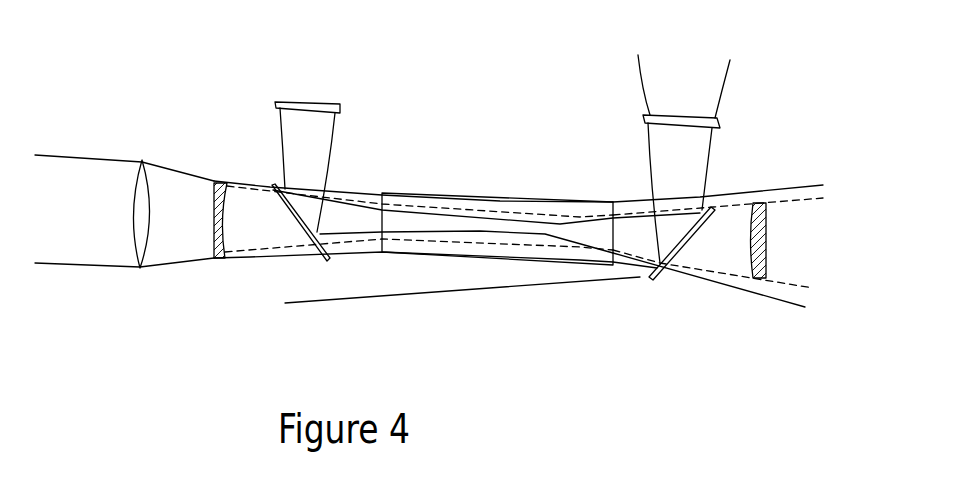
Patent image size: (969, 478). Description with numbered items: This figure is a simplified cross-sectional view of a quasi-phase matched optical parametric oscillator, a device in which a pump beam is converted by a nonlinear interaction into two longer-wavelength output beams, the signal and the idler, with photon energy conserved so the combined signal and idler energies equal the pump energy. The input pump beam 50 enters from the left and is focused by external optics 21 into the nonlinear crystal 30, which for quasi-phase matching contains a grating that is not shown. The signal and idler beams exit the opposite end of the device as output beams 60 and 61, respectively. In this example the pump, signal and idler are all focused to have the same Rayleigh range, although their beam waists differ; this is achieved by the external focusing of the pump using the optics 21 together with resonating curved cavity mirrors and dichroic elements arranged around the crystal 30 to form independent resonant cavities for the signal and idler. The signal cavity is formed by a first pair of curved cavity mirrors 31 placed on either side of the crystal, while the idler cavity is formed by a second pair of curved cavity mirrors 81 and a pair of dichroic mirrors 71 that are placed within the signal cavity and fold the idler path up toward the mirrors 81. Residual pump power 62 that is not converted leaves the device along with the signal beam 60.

The optics 21 is at (142, 160).
The first pair of curved cavity mirrors 31 is at (218, 183).
The input pump beam 50 is at (87, 263).
The pair of dichroic mirrors 71 is at (298, 222).
The second pair of curved cavity mirrors 81 is at (497, 156).
The nonlinear crystal 30 is at (523, 195).
The output beam (idler) 61 is at (728, 77).
The residual pump power 62 is at (750, 193).
The output beam (signal) 60 is at (798, 285).